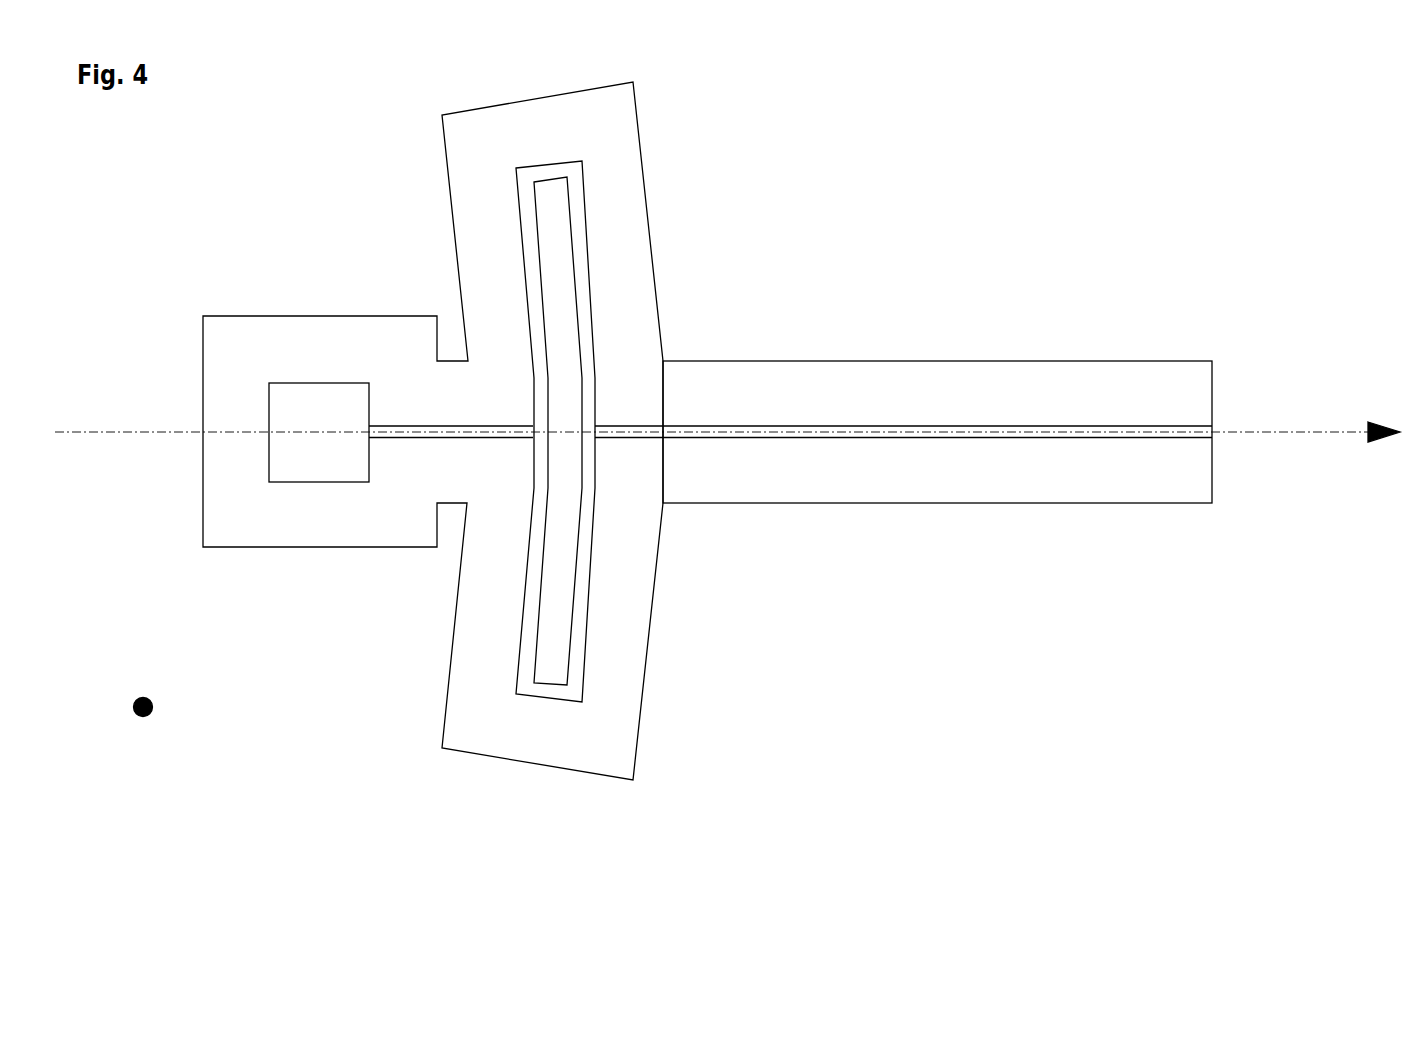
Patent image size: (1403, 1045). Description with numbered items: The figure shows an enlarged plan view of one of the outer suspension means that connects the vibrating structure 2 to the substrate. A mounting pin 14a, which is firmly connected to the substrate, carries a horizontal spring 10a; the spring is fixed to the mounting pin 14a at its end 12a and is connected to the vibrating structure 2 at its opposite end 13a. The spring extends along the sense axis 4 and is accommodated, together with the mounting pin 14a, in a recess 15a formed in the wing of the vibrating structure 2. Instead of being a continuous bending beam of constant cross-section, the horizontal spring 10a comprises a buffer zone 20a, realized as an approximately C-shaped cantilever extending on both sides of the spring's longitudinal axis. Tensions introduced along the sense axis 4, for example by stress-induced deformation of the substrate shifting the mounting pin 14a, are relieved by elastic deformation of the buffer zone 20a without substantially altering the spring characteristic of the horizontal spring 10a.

The vibrating structure 2 is at (152, 702).
The sense axis 4 is at (1322, 437).
The horizontal spring 10a is at (468, 443).
The end of horizontal spring 12a is at (397, 418).
The end of horizontal spring 13a is at (1192, 422).
The mounting pin 14a is at (315, 412).
The recess 15a is at (813, 392).
The buffer zone 20a is at (597, 240).